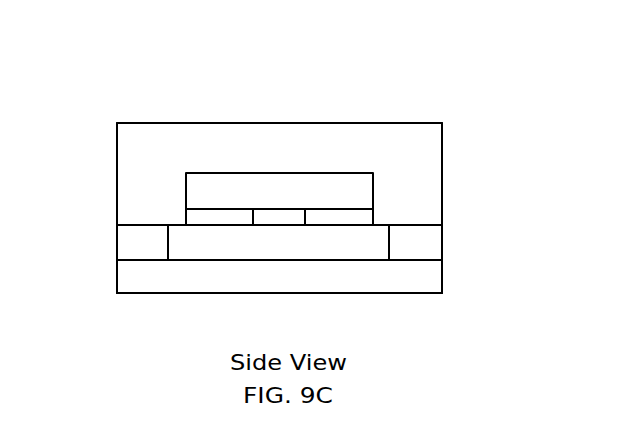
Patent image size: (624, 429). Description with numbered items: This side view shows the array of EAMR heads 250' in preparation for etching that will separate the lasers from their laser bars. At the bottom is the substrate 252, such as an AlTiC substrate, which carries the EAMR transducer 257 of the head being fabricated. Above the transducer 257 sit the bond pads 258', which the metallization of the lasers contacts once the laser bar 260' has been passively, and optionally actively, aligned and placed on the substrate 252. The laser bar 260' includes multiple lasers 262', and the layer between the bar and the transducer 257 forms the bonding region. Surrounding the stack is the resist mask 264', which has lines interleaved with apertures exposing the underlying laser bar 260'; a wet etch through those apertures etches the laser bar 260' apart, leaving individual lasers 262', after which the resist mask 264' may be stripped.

The array of EAMR heads 250' is at (279, 168).
The resist mask 264' is at (254, 185).
The laser bar 260' is at (279, 151).
The laser 262' is at (279, 217).
The bond pads 258' is at (282, 193).
The EAMR transducer 257 is at (187, 260).
The substrate 252 is at (322, 295).